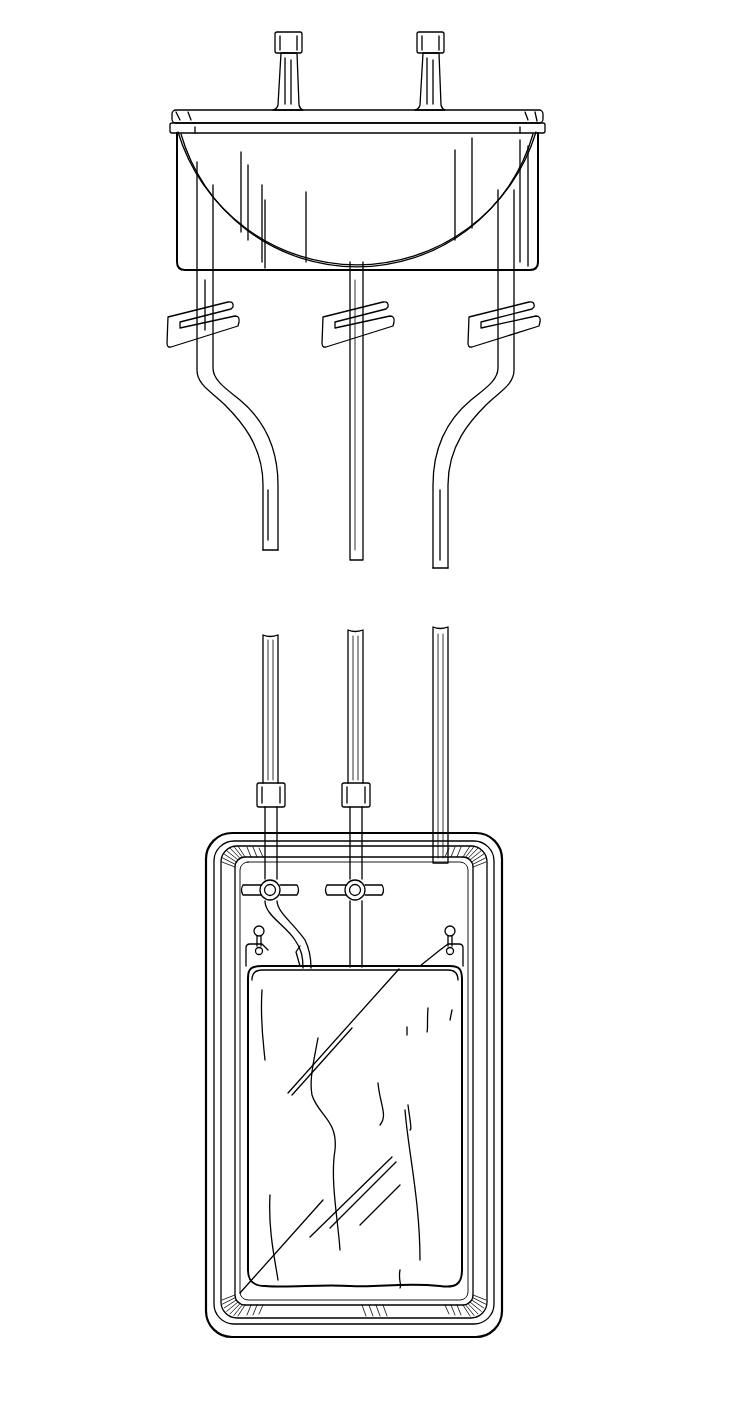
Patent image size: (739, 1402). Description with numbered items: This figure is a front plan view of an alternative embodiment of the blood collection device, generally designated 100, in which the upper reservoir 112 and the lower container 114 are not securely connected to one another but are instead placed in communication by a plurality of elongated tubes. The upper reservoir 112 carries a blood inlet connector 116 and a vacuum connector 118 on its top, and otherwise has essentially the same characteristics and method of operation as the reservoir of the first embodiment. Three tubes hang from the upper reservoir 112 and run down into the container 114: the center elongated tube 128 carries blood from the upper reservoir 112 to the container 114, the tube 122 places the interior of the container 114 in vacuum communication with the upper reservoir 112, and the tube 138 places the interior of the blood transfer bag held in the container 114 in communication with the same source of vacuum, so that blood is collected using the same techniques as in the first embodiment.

The device 100 is at (160, 560).
The upper reservoir 112 is at (537, 206).
The container 114 is at (483, 1123).
The blood inlet connector 116 is at (292, 46).
The vacuum connector 118 is at (432, 46).
The tube 122 is at (445, 523).
The center elongated tube 128 is at (356, 437).
The tube 138 is at (236, 416).